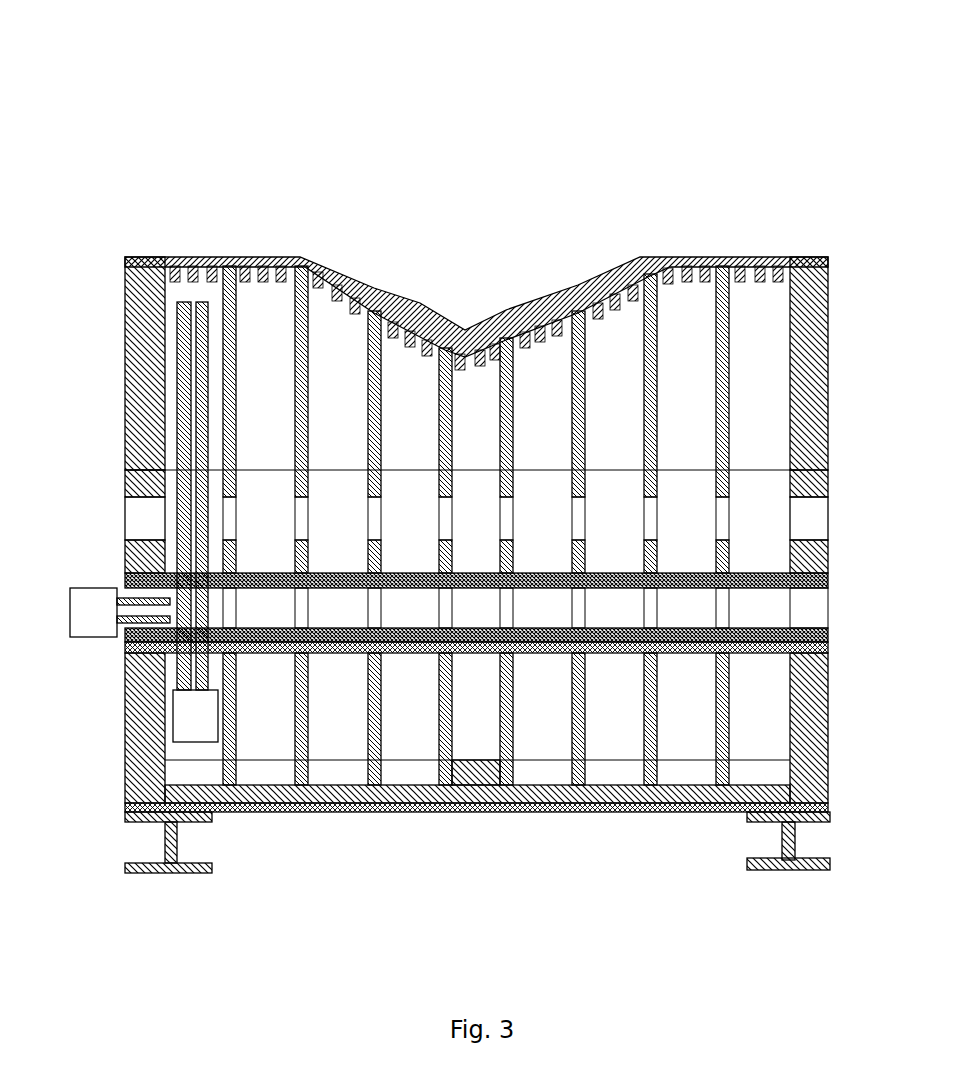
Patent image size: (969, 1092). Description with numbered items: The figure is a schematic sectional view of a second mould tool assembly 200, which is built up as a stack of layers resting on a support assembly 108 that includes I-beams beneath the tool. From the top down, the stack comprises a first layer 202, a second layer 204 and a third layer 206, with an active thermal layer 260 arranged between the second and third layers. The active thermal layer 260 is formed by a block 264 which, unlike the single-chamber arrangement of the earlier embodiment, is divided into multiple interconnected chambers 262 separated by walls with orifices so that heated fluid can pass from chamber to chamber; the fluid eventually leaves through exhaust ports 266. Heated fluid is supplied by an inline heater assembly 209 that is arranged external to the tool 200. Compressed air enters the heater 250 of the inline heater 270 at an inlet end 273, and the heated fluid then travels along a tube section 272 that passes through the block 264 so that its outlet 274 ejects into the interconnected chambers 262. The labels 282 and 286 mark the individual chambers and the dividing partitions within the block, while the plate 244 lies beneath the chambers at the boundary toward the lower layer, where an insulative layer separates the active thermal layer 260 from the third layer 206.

The second mould tool assembly 200 is at (777, 88).
The first layer 202 is at (110, 363).
The second layer 204 is at (110, 492).
The third layer 206 is at (110, 692).
The fluid supply assembly 209 is at (71, 563).
The substrate support plate 244 is at (828, 648).
The heater 250 is at (195, 716).
The active thermal layer 260 is at (836, 556).
The interconnected chambers 262 is at (700, 608).
The block 264 is at (828, 632).
The exhaust ports 266 is at (853, 622).
The inline heater 270 is at (93, 612).
The tube section 272 is at (126, 632).
The inlet end 273 is at (62, 613).
The outlet 274 is at (170, 604).
The cells 282 is at (368, 608).
The partition 286 is at (439, 604).
The support assembly 108 is at (88, 760).